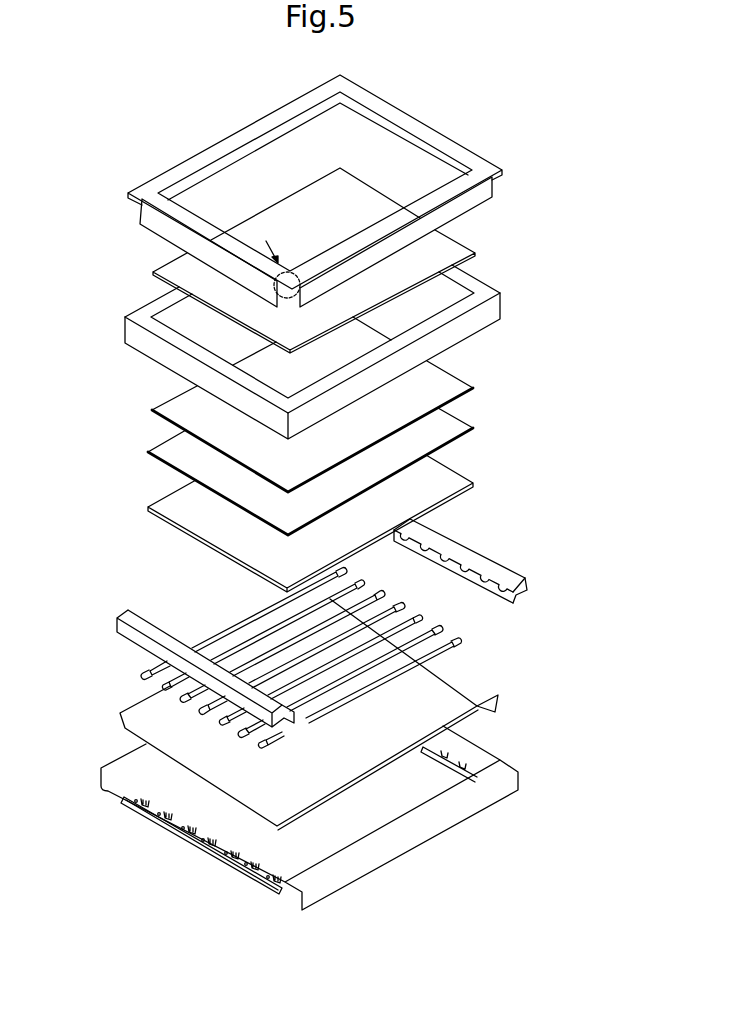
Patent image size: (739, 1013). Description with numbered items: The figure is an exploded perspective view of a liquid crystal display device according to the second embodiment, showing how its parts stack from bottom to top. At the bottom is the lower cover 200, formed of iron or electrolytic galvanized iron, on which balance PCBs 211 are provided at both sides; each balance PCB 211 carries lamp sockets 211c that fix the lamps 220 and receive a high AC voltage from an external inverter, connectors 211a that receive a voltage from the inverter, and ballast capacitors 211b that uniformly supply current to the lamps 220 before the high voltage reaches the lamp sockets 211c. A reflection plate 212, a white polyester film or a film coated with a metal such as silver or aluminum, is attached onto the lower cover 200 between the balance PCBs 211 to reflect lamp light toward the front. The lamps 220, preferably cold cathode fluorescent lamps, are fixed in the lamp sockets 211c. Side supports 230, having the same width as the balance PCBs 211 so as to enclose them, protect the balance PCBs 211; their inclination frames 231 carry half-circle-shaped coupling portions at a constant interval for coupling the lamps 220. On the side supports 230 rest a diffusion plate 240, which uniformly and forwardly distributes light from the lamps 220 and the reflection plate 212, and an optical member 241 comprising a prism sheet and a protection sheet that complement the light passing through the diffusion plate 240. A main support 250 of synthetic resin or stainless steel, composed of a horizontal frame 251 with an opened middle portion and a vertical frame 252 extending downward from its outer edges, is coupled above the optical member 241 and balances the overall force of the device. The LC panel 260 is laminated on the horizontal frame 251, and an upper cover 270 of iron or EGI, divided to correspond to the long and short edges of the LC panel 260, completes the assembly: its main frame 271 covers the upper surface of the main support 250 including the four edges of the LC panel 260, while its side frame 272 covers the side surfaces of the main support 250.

The lower cover 200 is at (321, 818).
The balance PCB 211 is at (228, 862).
The connector 211a is at (198, 849).
The ballast capacitor 211b is at (145, 821).
The lamp socket 211c is at (176, 828).
The reflection plate 212 is at (453, 694).
The lamp 220 is at (462, 639).
The side support 230 is at (476, 564).
The inclination frame 231 is at (516, 597).
The diffusion plate 240 is at (457, 482).
The optical member 241 is at (481, 386).
The main support 250 is at (343, 341).
The horizontal frame 251 is at (473, 282).
The vertical frame 252 is at (341, 359).
The LC panel 260 is at (463, 245).
The upper cover 270 is at (336, 191).
The main frame 271 is at (455, 141).
The side frame 272 is at (339, 224).